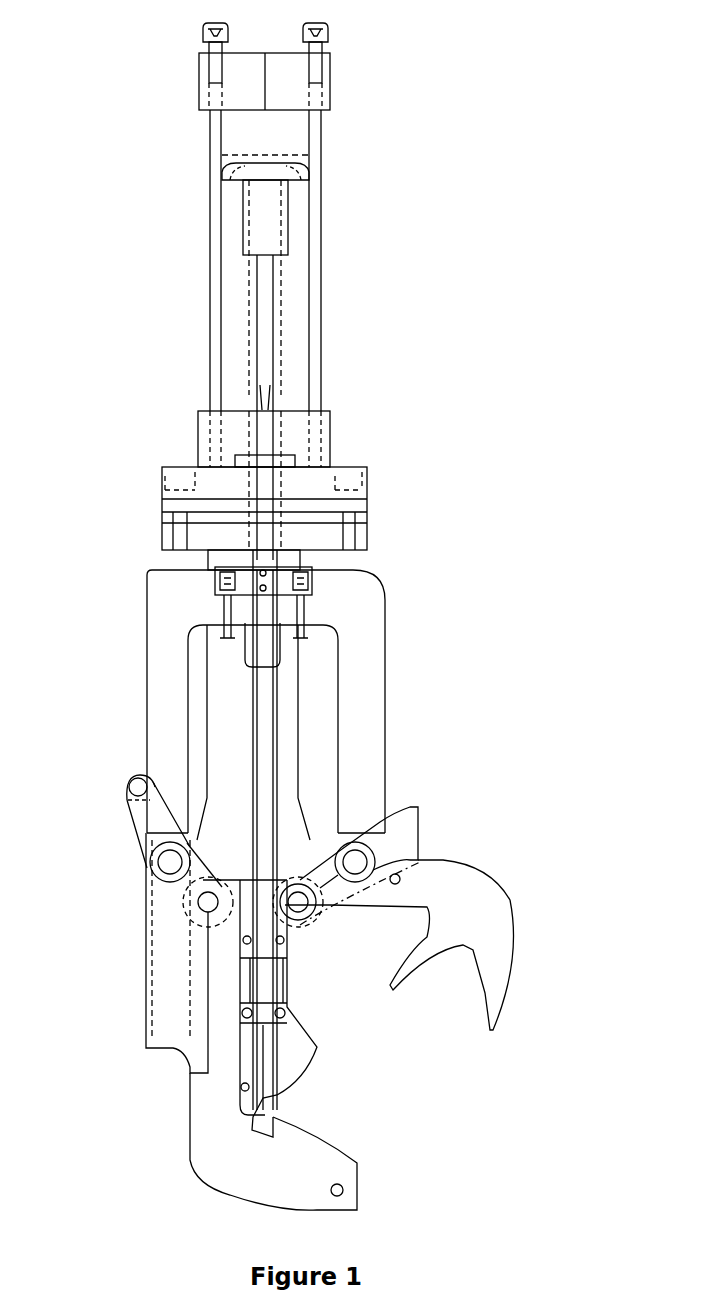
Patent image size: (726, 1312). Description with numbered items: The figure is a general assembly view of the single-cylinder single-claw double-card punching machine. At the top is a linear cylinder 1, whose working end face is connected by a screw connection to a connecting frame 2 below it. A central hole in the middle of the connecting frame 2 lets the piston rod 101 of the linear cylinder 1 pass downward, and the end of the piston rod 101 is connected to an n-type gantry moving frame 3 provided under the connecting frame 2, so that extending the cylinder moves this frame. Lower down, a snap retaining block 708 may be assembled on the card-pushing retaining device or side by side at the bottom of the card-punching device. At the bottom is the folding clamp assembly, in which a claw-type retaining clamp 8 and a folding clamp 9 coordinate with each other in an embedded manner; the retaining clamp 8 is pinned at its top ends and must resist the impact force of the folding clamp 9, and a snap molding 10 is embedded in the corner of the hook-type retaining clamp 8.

The linear cylinder 1 is at (245, 137).
The piston rod 101 is at (250, 555).
The connecting frame 2 is at (222, 672).
The n-type gantry moving frame 3 is at (165, 742).
The snap retaining block 708 is at (330, 757).
The retaining clamp 8 is at (165, 930).
The folding clamp 9 is at (455, 908).
The snap molding 10 is at (258, 1132).